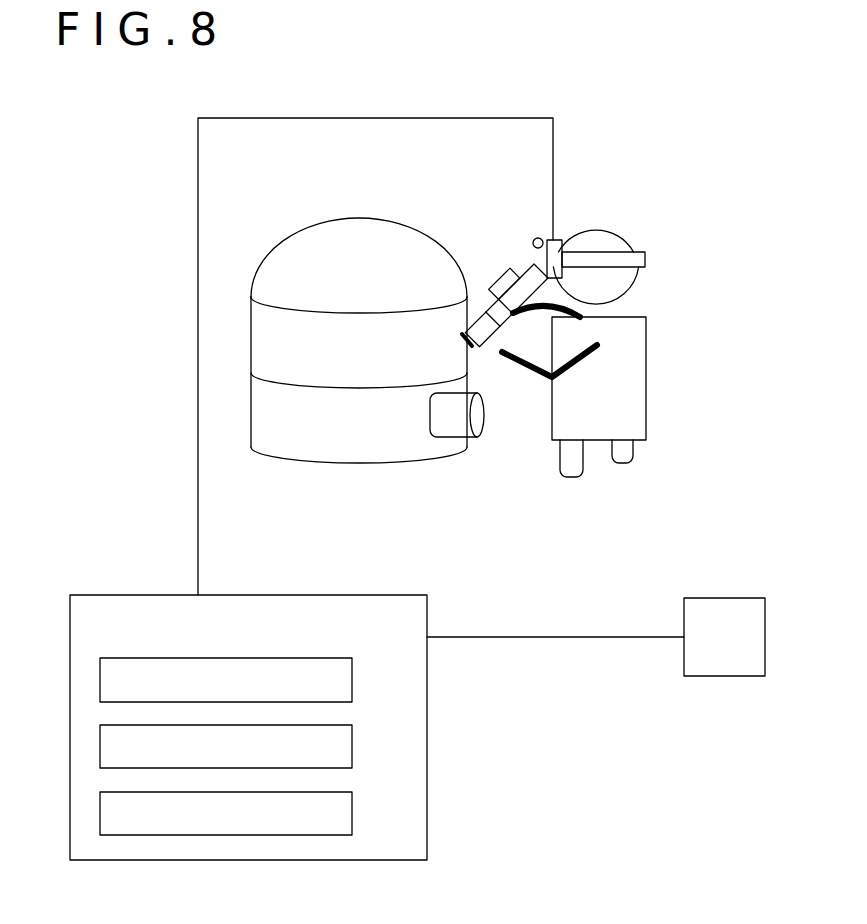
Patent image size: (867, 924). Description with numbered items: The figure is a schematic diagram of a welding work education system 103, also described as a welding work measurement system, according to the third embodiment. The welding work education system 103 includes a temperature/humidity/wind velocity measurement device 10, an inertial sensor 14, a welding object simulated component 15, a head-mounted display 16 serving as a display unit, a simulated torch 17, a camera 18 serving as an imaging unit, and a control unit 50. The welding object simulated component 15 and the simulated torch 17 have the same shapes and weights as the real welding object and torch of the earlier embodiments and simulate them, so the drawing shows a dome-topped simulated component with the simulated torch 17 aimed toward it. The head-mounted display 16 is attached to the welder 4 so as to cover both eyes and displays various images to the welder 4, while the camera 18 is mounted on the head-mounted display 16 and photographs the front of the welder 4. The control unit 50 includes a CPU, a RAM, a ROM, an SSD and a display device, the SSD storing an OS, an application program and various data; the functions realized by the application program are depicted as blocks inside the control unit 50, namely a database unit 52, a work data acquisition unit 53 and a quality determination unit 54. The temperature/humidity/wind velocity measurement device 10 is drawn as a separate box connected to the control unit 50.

The welding work education system 103 is at (558, 727).
The welding object simulated component 15 is at (373, 237).
The inertial sensor 14 is at (500, 268).
The simulated torch 17 is at (482, 350).
The camera 18 is at (538, 238).
The head-mounted display 16 is at (647, 258).
The welder 4 is at (647, 346).
The control unit 50 is at (248, 706).
The database unit 52 is at (352, 686).
The work data acquisition unit 53 is at (352, 750).
The quality determination unit 54 is at (352, 816).
The temperature/humidity/wind velocity measurement device 10 is at (725, 598).